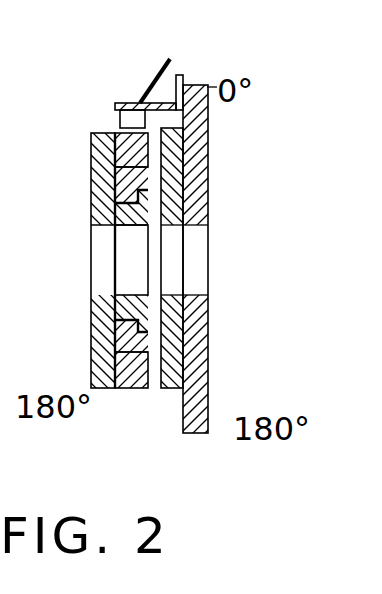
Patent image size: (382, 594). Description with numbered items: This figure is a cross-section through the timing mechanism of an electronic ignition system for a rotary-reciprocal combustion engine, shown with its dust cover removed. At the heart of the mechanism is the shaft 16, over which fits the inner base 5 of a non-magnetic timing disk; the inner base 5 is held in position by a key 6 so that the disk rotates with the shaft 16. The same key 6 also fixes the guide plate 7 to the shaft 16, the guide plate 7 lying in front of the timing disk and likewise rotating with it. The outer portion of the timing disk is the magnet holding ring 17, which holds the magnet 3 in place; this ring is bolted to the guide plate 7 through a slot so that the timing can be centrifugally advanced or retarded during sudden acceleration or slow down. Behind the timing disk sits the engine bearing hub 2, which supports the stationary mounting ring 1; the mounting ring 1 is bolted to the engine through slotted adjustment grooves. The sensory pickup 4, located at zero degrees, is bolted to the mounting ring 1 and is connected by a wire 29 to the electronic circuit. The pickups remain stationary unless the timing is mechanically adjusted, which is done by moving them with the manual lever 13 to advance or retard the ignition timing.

The mounting ring 1 is at (195, 400).
The engine bearing hub 2 is at (177, 360).
The magnet 3 is at (125, 140).
The sensory pickup 4 is at (132, 122).
The inner base 5 is at (118, 202).
The key 6 is at (105, 224).
The guide plate 7 is at (105, 157).
The manual lever 13 is at (184, 83).
The shaft 16 is at (104, 262).
The magnet holding ring 17 is at (128, 340).
The wire 29 is at (162, 65).